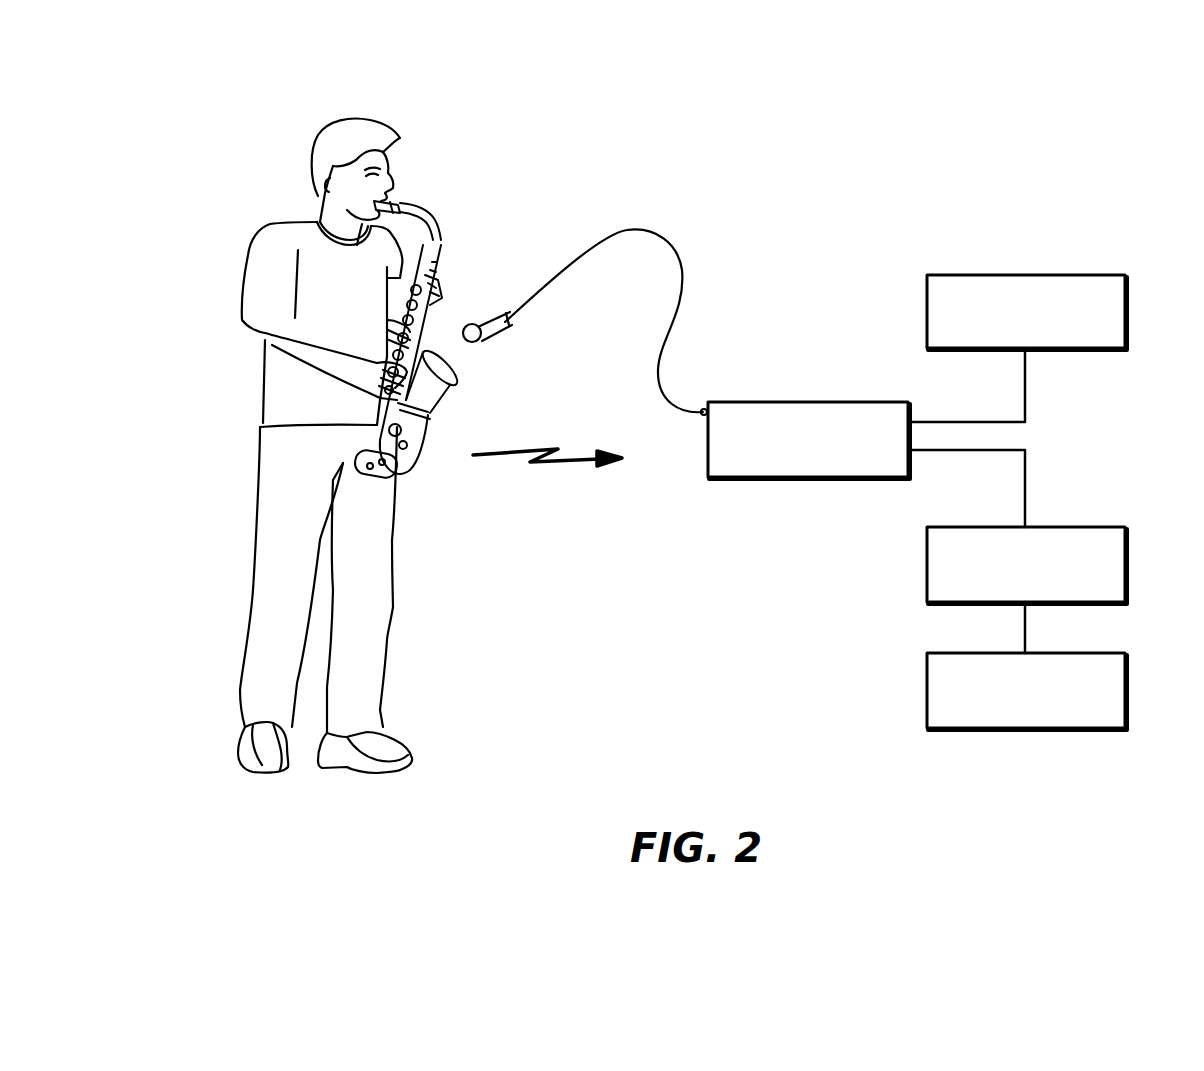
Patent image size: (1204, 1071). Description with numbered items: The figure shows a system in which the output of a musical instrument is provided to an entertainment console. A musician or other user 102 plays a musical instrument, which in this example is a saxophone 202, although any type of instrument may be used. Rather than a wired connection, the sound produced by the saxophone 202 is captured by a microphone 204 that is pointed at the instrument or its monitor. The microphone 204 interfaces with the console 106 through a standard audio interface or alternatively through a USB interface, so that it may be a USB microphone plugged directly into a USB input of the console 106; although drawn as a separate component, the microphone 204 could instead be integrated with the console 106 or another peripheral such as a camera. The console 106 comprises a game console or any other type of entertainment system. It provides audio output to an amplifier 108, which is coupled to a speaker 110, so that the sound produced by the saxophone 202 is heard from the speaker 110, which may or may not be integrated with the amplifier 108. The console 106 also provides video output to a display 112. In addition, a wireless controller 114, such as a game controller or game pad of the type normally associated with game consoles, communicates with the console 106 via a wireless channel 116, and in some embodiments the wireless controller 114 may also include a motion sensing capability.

The user 102 is at (353, 118).
The saxophone 202 is at (417, 208).
The microphone 204 is at (640, 230).
The wireless controller 114 is at (417, 467).
The wireless channel 116 is at (520, 447).
The console 106 is at (852, 402).
The display 112 is at (1067, 275).
The amplifier 108 is at (1067, 527).
The speaker 110 is at (1067, 653).